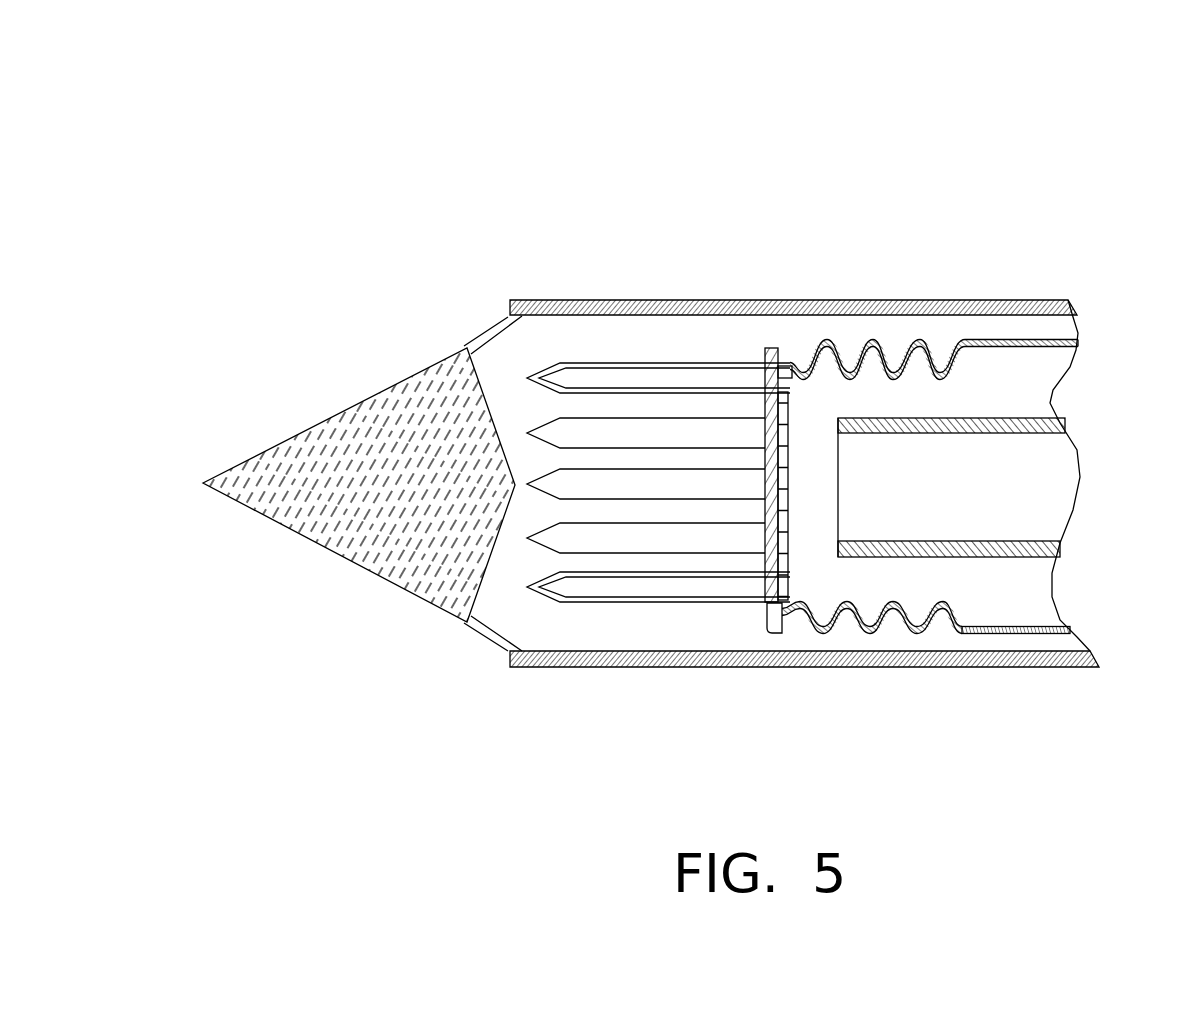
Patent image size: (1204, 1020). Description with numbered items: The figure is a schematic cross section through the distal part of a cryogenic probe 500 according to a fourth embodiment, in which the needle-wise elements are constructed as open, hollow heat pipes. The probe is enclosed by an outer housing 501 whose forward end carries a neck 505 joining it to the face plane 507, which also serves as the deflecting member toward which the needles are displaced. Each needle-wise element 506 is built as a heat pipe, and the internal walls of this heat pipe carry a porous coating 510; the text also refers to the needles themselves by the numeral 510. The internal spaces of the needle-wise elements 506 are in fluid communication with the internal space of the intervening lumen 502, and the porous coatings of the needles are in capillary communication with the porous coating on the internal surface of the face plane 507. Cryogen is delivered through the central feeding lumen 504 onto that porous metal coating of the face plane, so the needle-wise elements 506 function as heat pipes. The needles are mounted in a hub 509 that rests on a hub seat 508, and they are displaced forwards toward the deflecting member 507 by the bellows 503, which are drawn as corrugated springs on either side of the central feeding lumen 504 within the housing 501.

The needle injection assembly 500 is at (1015, 275).
The outer housing wall 501 is at (828, 302).
The intervening lumen 502 is at (1003, 636).
The bellows 503 is at (866, 633).
The central feeding lumen 504 is at (1010, 433).
The neck of housing 505 is at (492, 322).
The needle-wise element 506 is at (610, 602).
The face plane 507 is at (348, 413).
The hub seat 508 is at (760, 613).
The needle hub 509 is at (782, 423).
The porous coating 510 is at (640, 366).